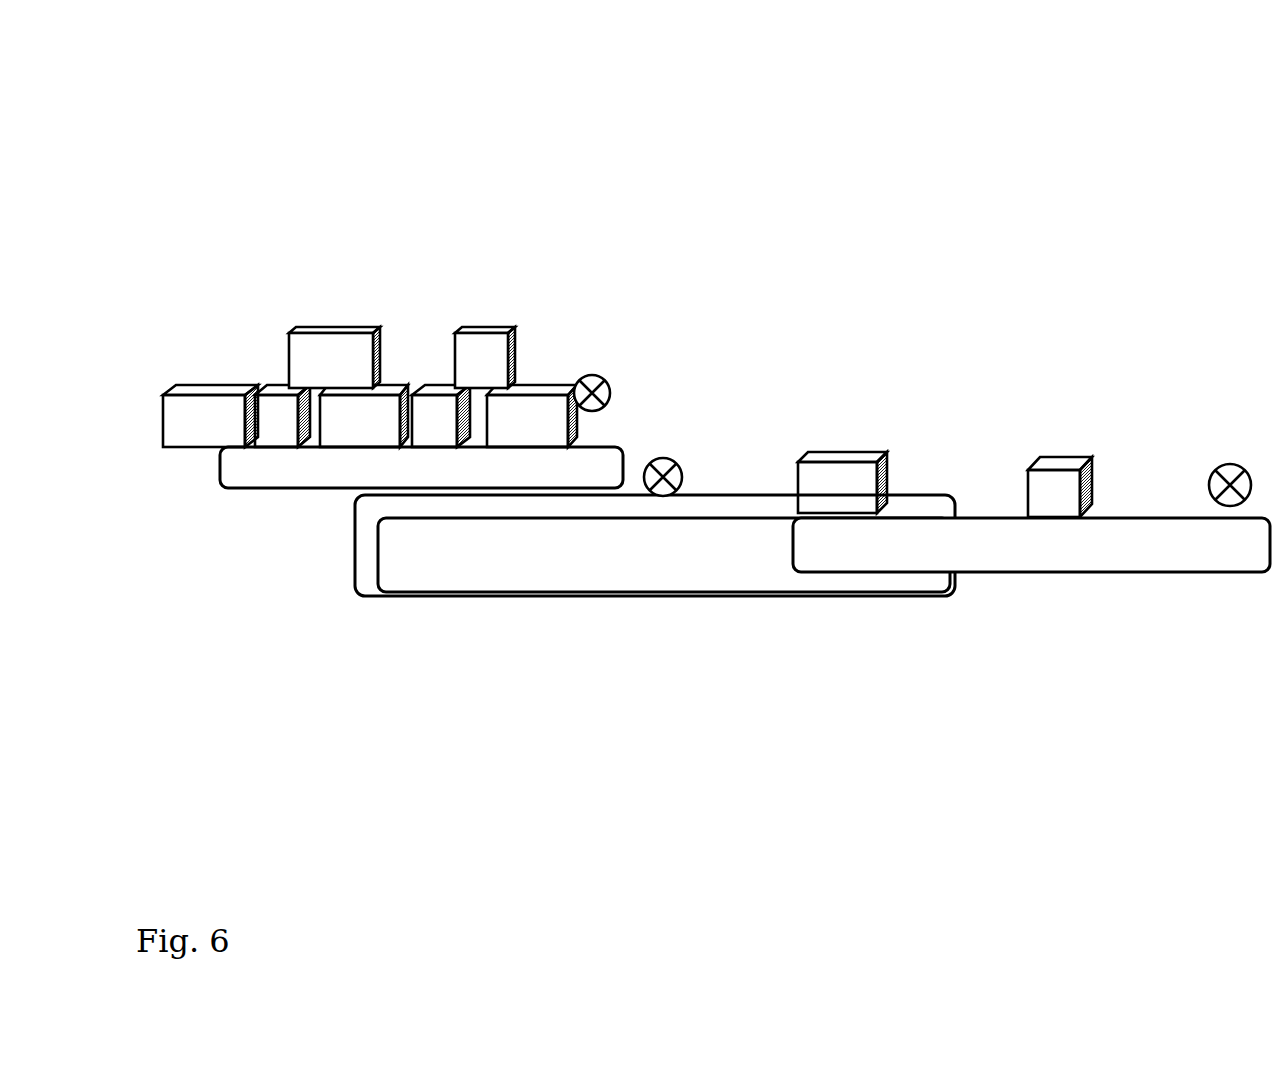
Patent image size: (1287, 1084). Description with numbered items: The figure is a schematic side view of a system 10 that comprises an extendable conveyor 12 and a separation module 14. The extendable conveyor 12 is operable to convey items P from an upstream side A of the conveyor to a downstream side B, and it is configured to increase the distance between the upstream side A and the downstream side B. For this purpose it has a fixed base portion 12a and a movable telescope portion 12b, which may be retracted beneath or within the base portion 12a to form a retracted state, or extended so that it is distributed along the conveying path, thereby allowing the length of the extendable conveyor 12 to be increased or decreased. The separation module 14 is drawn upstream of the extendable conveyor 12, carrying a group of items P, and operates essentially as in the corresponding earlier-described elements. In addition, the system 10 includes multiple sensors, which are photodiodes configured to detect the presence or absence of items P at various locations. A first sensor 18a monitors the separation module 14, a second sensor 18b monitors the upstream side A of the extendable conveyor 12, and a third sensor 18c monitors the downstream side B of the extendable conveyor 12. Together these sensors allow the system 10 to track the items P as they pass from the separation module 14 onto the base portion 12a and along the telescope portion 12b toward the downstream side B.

The system 10 is at (228, 128).
The extendable conveyor 12 is at (812, 646).
The fixed base portion 12a is at (655, 545).
The movable telescope portion 12b is at (1031, 545).
The separation module 14 is at (276, 498).
The first sensor 18a is at (617, 394).
The second sensor 18b is at (687, 478).
The third sensor 18c is at (1203, 483).
The items P is at (437, 305).
The upstream side A is at (611, 737).
The downstream side B is at (1260, 724).